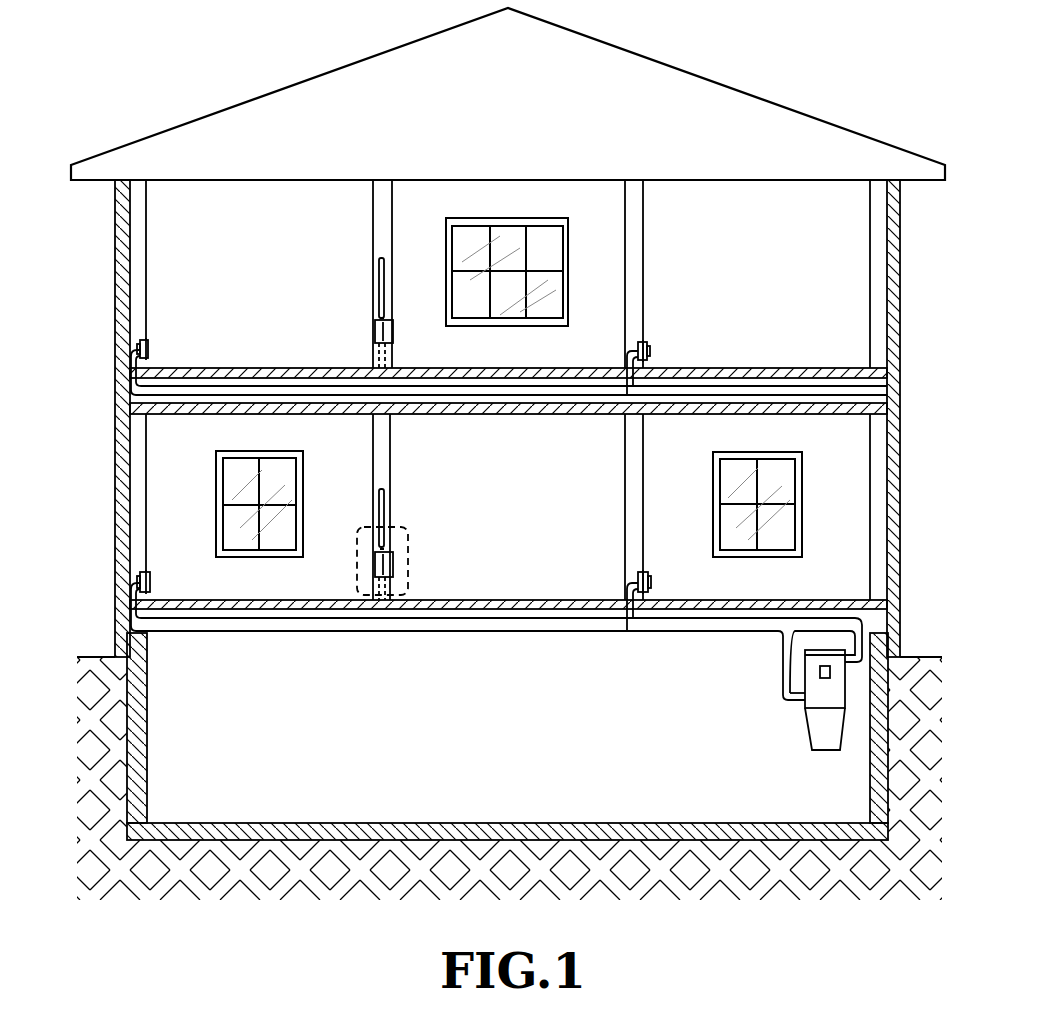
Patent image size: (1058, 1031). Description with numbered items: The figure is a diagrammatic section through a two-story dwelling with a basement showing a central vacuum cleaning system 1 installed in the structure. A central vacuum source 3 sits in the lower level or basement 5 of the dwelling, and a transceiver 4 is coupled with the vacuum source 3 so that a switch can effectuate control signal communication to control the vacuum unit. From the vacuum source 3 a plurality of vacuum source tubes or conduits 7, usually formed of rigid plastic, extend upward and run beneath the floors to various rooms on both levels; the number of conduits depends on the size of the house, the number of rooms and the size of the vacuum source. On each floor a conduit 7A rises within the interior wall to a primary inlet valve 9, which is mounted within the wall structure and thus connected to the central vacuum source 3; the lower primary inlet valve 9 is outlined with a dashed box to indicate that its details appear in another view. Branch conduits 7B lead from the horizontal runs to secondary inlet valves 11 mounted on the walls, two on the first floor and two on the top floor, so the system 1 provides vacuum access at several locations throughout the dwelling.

The central vacuum cleaning system 1 is at (752, 60).
The central vacuum source 3 is at (800, 728).
The transceiver 4 is at (819, 672).
The basement 5 is at (728, 799).
The vacuum source conduit 7 is at (522, 642).
The conduit 7A is at (372, 268).
The conduit 7B is at (133, 355).
The primary inlet valve 9 is at (370, 340).
The secondary inlet valve 11 is at (155, 341).